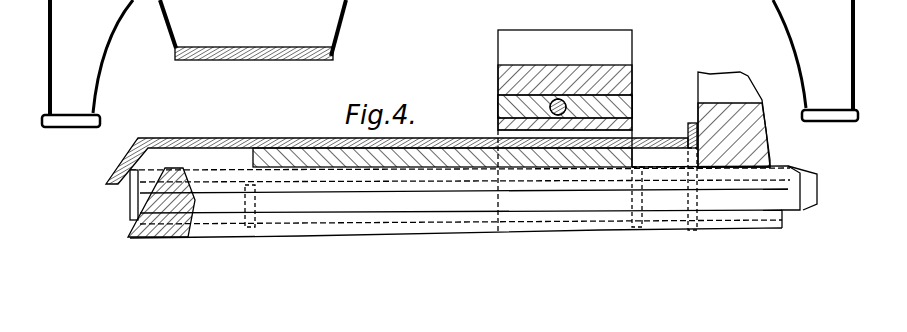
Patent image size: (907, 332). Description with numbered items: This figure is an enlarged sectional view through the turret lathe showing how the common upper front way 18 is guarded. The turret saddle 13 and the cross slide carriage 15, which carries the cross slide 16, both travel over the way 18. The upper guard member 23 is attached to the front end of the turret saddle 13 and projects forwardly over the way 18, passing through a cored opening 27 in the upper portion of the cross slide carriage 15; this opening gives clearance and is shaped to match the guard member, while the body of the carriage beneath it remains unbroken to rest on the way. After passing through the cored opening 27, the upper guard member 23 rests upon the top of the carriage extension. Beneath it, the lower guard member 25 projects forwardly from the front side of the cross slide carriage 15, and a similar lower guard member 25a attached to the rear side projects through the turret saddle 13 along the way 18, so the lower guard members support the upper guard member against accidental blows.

The turret saddle 13 is at (718, 87).
The cross slide carriage 15 is at (636, 120).
The cross slide 16 is at (636, 78).
The upper front way 18 is at (125, 215).
The upper guard member 23 is at (215, 141).
The lower guard member 25 is at (130, 196).
The lower guard member 25a is at (820, 192).
The cored opening 27 is at (498, 138).